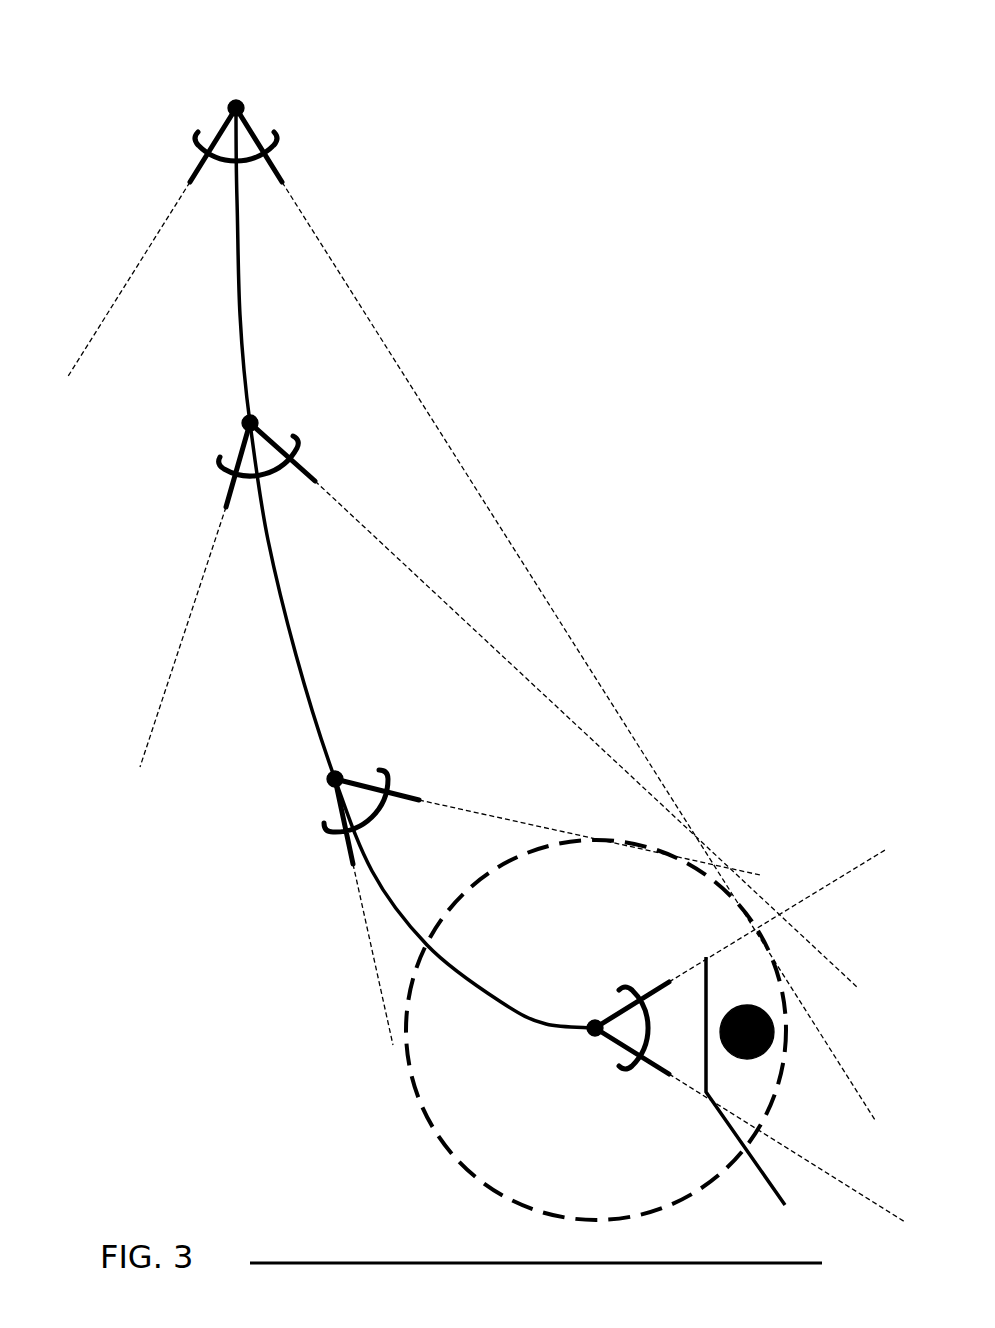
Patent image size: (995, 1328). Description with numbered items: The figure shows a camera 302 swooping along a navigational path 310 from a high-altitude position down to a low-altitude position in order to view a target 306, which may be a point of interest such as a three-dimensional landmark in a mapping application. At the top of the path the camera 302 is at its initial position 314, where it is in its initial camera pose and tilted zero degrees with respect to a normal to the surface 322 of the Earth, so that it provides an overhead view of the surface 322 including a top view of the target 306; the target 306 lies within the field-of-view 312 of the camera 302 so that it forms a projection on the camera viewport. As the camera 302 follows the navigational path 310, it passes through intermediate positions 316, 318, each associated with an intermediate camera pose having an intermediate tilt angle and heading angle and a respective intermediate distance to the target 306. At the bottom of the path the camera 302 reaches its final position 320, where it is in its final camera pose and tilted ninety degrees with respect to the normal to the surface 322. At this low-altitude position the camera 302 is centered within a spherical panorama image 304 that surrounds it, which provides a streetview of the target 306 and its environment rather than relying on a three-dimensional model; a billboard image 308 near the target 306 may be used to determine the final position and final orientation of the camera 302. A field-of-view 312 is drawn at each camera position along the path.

The camera 302 is at (258, 140).
The panorama image 304 is at (460, 1165).
The target 306 is at (763, 1055).
The billboard image 308 is at (758, 1096).
The navigational path 310 is at (240, 315).
The field-of-view 312 is at (113, 303).
The initial position 314 is at (236, 108).
The intermediate position 316 is at (250, 423).
The intermediate position 318 is at (335, 779).
The final position 320 is at (587, 1042).
The surface 322 is at (305, 1262).